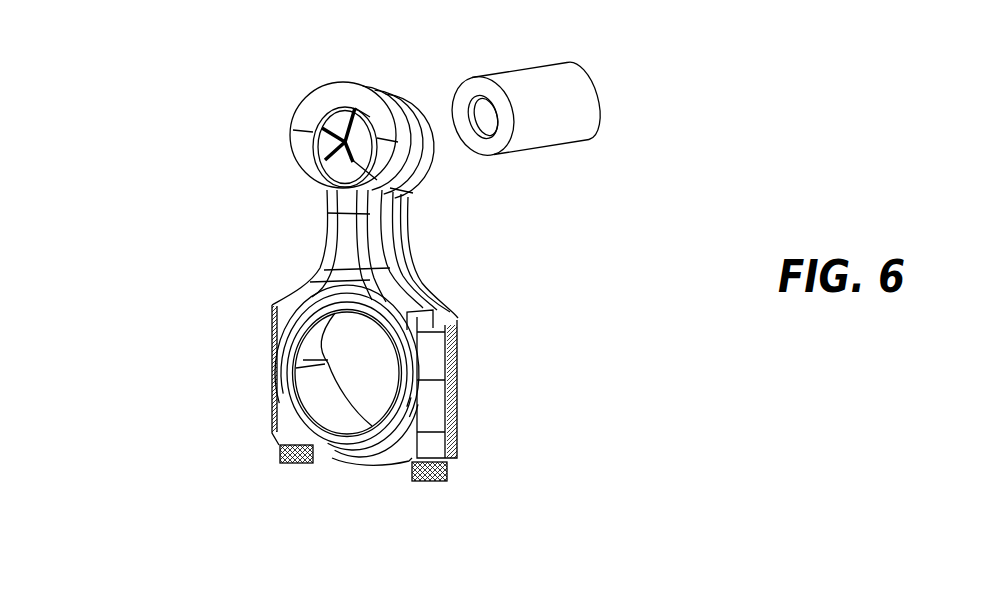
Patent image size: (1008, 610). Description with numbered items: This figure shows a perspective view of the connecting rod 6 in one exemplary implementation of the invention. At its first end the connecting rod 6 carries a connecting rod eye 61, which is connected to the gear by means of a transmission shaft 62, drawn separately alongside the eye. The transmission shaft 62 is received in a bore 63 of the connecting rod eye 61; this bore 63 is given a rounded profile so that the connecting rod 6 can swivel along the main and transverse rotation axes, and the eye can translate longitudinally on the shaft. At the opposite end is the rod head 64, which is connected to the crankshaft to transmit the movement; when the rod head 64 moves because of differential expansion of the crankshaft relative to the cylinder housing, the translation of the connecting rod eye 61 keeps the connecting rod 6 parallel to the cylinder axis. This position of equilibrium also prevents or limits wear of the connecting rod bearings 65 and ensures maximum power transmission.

The connecting rod 6 is at (207, 327).
The connecting rod eye 61 is at (320, 102).
The transmission shaft 62 is at (555, 72).
The bore 63 is at (344, 170).
The rod head 64 is at (282, 448).
The connecting rod bearings 65 is at (345, 420).